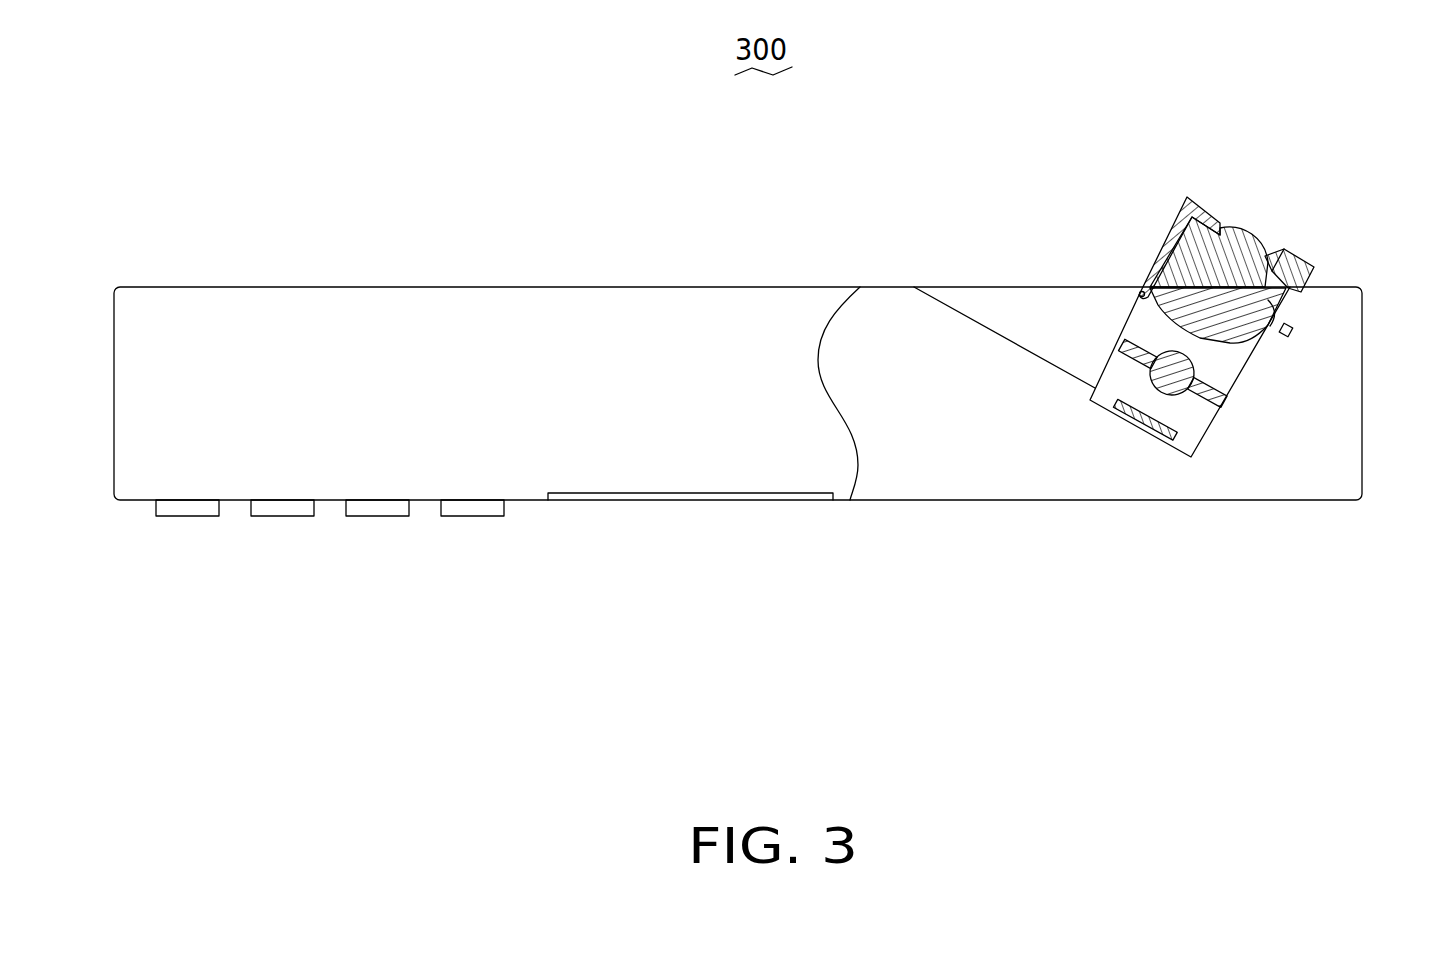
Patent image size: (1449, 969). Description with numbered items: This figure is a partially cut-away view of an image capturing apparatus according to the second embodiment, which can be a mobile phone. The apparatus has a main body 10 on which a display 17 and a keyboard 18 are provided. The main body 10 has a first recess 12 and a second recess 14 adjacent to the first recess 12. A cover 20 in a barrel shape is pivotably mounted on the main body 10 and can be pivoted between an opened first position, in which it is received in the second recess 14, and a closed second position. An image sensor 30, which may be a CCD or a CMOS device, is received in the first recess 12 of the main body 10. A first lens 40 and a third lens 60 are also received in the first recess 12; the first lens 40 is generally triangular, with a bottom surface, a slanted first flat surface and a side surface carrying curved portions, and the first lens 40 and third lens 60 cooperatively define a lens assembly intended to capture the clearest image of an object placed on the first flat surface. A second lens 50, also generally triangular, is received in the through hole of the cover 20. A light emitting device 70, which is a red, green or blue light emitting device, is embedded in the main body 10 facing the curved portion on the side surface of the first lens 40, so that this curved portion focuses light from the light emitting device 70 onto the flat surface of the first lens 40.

The main body 10 is at (369, 340).
The first recess 12 is at (1190, 423).
The second recess 14 is at (972, 302).
The display 17 is at (579, 495).
The keyboard 18 is at (182, 508).
The cover 20 is at (1187, 196).
The image sensor 30 is at (1160, 437).
The first lens 40 is at (1265, 325).
The second lens 50 is at (1195, 248).
The third lens 60 is at (1147, 353).
The light emitting device 70 is at (1291, 330).